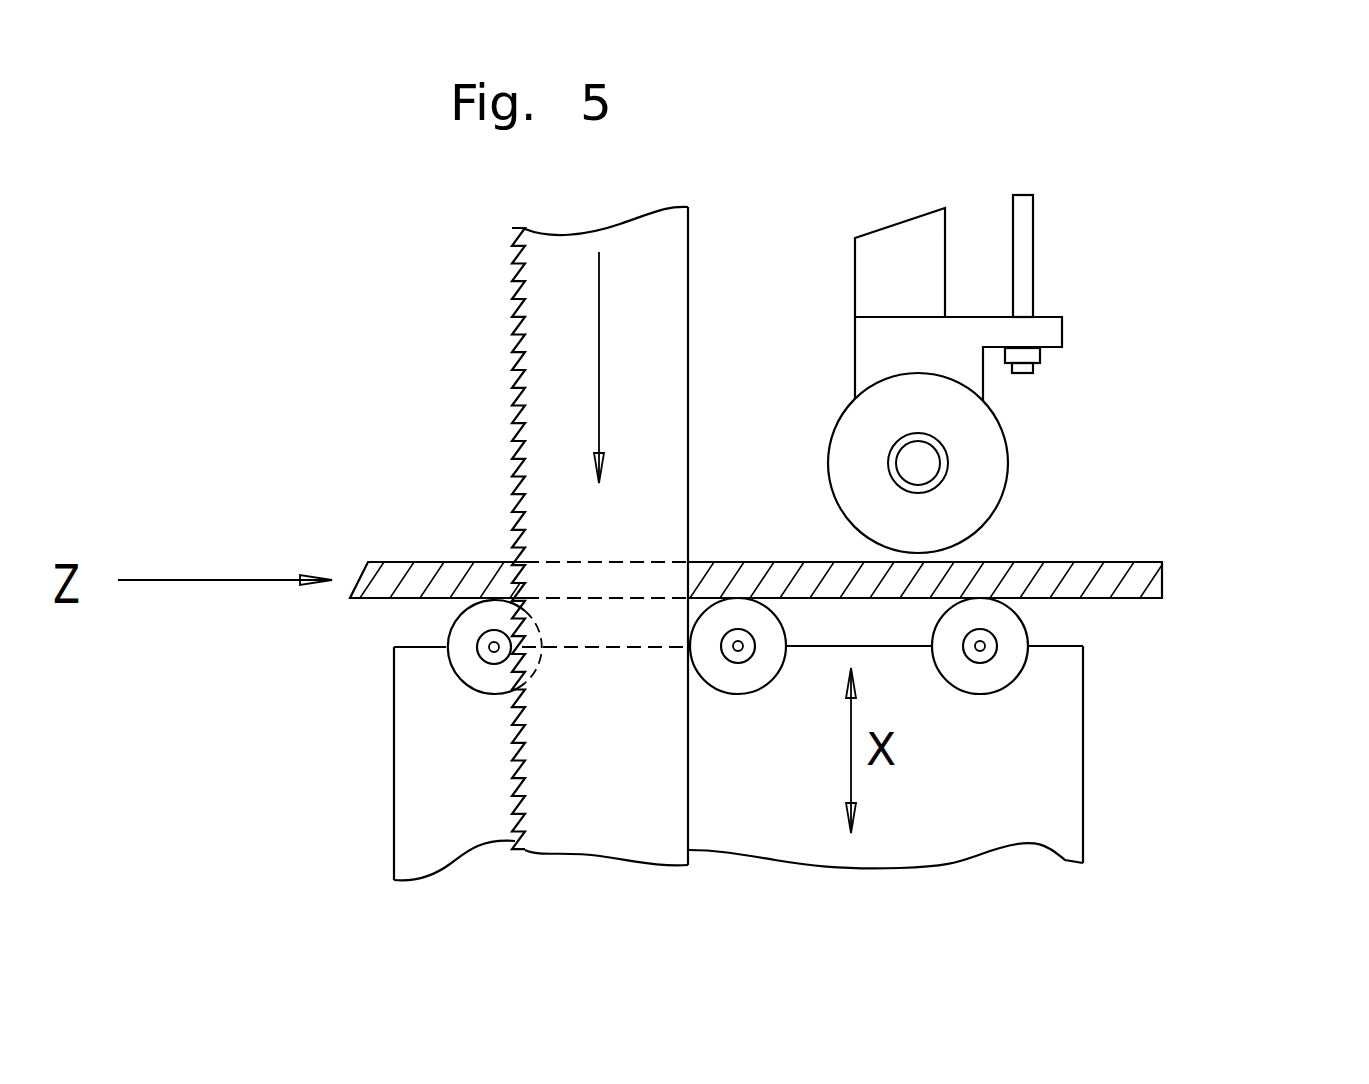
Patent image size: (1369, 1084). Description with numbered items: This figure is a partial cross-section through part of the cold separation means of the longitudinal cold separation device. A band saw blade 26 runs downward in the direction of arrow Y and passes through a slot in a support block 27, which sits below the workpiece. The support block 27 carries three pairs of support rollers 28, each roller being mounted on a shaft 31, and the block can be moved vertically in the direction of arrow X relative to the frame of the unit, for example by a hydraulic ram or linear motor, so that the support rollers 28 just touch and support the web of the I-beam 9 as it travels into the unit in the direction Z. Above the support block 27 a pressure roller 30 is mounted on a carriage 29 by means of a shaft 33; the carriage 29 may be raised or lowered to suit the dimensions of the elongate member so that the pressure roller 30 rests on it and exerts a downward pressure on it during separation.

The I-beam 9 is at (1152, 578).
The saw blade 26 is at (543, 457).
The support block 27 is at (423, 740).
The support rollers 28 is at (468, 668).
The carriage 29 is at (932, 243).
The pressure roller 30 is at (990, 437).
The shaft 31 is at (493, 646).
The shaft 33 is at (917, 467).